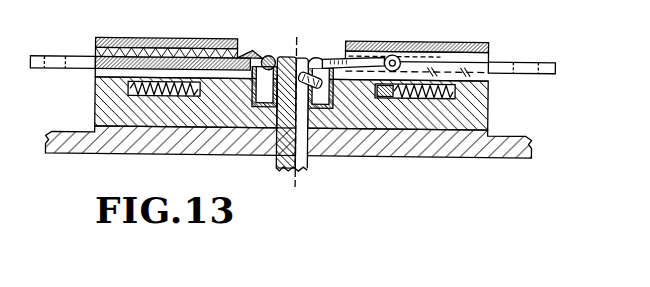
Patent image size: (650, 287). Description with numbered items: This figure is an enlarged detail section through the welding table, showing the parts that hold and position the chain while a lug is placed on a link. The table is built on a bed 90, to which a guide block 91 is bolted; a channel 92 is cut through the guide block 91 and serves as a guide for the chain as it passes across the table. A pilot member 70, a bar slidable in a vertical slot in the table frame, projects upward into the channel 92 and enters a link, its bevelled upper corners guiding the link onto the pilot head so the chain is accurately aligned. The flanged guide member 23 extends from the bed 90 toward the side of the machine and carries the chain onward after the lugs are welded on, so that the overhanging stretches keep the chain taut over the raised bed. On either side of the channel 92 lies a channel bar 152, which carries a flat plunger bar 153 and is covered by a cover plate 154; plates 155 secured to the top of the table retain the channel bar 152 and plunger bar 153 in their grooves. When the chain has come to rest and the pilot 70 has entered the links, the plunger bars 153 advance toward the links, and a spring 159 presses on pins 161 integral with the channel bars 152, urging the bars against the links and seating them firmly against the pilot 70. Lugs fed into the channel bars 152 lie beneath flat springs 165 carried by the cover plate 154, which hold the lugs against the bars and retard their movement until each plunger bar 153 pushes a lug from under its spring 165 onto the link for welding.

The flanged guide member 23 is at (307, 110).
The pilot member 70 is at (301, 62).
The bed 90 is at (531, 132).
The guide block 91 is at (474, 111).
The channel 92 is at (309, 113).
The channel bar 152 is at (97, 76).
The plunger bar 153 is at (91, 58).
The cover plate 154 is at (157, 26).
The plates 155 is at (497, 22).
The spring 159 is at (128, 109).
The pins 161 is at (172, 113).
The flat springs 165 is at (280, 33).